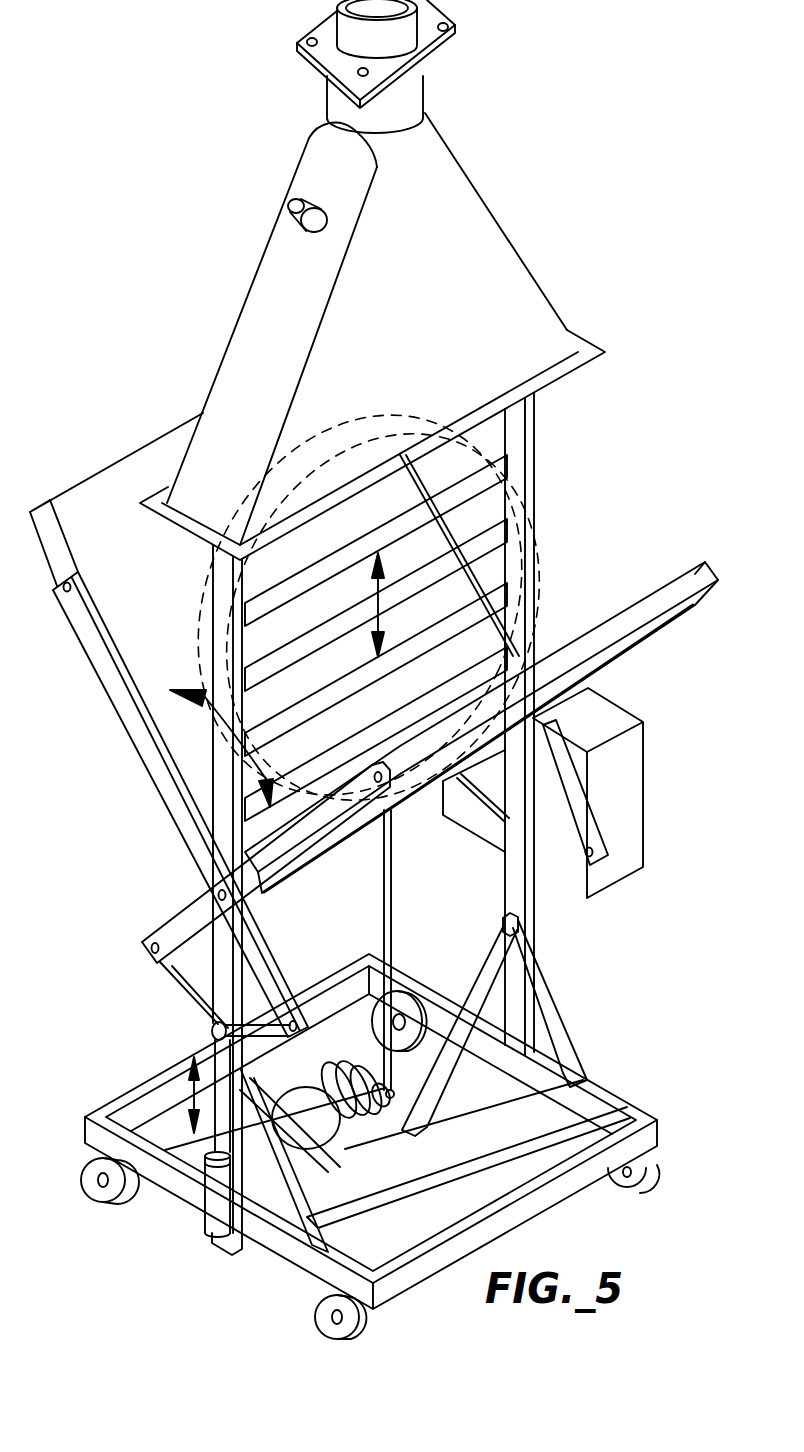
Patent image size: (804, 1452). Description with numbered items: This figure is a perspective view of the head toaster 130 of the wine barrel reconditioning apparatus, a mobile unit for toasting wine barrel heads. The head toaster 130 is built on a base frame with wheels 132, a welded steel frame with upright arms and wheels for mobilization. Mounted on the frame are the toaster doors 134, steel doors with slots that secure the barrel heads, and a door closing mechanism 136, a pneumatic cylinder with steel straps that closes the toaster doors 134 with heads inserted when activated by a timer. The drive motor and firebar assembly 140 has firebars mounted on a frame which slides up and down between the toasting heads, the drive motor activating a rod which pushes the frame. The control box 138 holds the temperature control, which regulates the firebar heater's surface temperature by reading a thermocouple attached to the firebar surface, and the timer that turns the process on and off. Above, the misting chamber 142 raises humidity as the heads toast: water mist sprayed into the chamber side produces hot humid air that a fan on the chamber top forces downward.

The head toaster 130 is at (170, 1283).
The base frame with wheels 132 is at (552, 1003).
The toaster doors 134 is at (670, 590).
The door closing mechanism 136 is at (212, 1213).
The drive motor and firebar assembly 140 is at (320, 1138).
The control box 138 is at (619, 787).
The misting chamber 142 is at (246, 340).